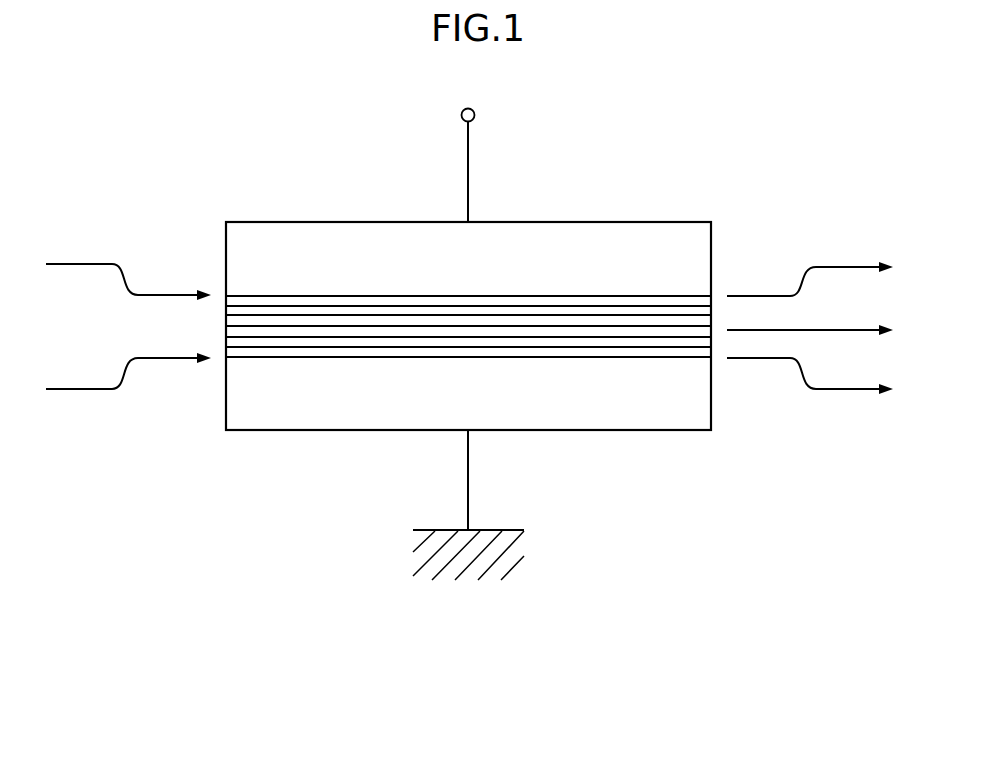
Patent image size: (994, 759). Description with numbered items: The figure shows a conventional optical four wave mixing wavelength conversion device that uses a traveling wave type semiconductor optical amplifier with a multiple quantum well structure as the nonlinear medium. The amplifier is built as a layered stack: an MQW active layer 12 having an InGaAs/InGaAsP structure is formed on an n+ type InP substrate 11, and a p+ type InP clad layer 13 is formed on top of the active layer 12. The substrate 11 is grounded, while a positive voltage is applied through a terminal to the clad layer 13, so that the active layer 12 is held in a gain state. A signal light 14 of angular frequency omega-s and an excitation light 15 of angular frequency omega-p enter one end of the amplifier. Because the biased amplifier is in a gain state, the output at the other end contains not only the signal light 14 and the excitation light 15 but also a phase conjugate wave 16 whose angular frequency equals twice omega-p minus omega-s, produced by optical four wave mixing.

The n+ type InP substrate 11 is at (682, 413).
The MQW active layer 12 is at (592, 311).
The p+ type InP clad layer 13 is at (666, 232).
The signal light 14 is at (75, 262).
The excitation light 15 is at (75, 392).
The phase conjugate wave 16 is at (868, 333).